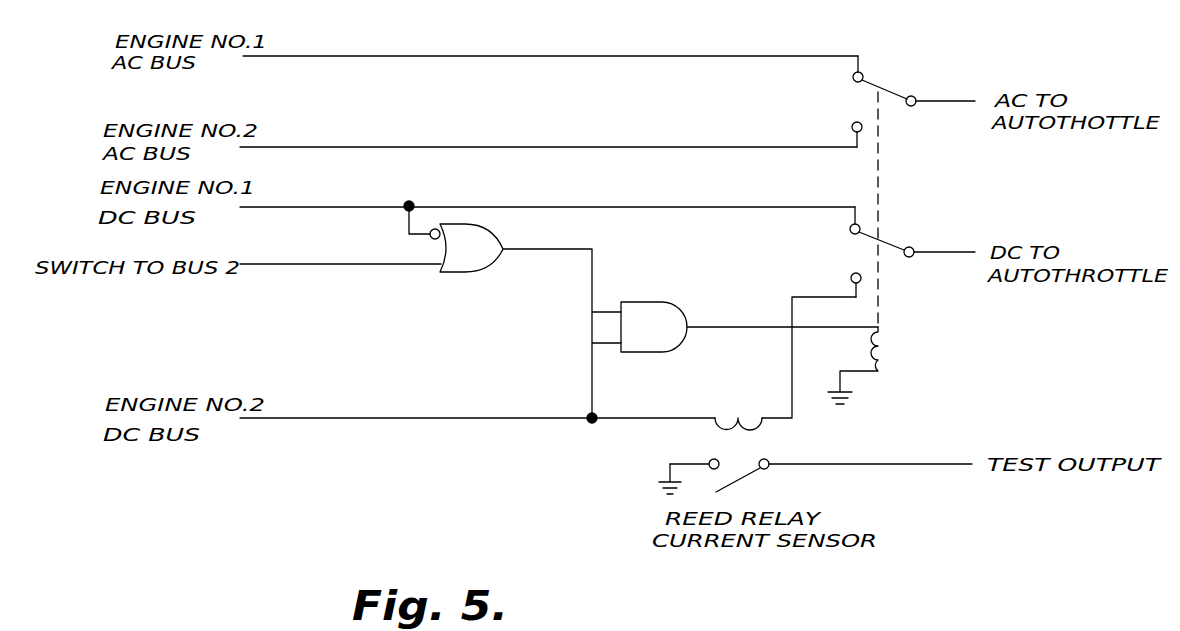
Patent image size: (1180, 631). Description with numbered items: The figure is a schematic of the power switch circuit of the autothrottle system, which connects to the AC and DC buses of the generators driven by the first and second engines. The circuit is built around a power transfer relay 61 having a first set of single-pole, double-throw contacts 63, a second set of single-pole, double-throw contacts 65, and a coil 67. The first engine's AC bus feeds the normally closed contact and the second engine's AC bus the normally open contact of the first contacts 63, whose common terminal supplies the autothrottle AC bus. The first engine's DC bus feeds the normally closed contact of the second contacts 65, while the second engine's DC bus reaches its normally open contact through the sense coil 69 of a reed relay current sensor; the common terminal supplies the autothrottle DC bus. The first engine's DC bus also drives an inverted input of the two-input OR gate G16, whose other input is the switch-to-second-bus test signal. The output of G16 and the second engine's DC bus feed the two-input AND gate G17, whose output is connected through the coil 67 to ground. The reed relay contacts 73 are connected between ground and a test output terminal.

The power transfer relay 61 is at (907, 214).
The first set of single-pole, double-throw switch contacts 63 is at (880, 92).
The second set of single-pole, double-throw switch contacts 65 is at (890, 245).
The coil 67 is at (880, 352).
The sense coil 69 is at (745, 421).
The contacts of the reed relay current sensor 73 is at (745, 462).
The two-input OR gate G16 is at (470, 272).
The two-input AND gate G17 is at (664, 290).